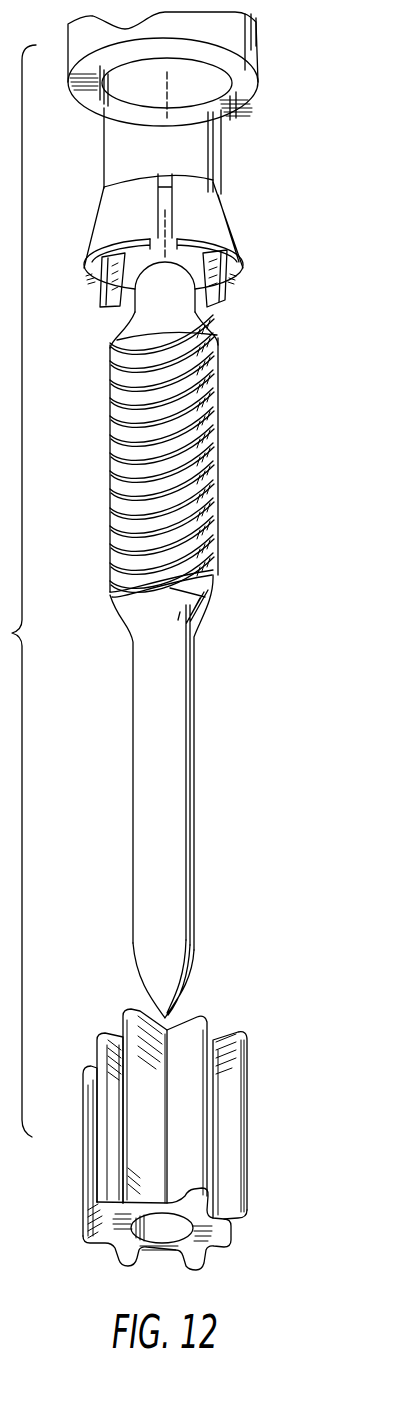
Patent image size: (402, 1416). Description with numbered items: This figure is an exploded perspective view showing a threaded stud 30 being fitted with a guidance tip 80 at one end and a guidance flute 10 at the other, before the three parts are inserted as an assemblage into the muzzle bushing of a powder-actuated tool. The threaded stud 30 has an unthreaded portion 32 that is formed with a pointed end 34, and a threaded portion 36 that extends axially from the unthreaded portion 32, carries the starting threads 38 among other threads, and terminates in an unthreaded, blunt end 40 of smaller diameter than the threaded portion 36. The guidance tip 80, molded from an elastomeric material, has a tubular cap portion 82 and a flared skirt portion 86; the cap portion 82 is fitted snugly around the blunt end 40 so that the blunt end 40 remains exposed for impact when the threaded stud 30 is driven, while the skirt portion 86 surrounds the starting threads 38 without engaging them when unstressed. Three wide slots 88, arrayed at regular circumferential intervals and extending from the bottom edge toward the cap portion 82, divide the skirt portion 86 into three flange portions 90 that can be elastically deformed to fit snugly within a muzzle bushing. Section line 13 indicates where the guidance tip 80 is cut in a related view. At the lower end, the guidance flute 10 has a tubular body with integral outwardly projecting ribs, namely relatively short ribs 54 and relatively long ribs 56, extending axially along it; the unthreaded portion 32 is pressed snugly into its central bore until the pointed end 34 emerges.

The guidance flute 10 is at (169, 1129).
The section line 13- 13 is at (177, 85).
The threaded stud 30 is at (194, 640).
The unthreaded portion 32 is at (187, 757).
The pointed end 34 is at (168, 1002).
The threaded portion 36 is at (192, 456).
The starting threads 38 is at (214, 371).
The blunt end 40 is at (148, 293).
The relatively short ribs 54 is at (100, 1045).
The relatively long ribs 56 is at (128, 1015).
The guidance tip 80 is at (165, 172).
The cap portion 82 is at (223, 148).
The skirt portion 86 is at (225, 225).
The wide slots 88 is at (167, 168).
The flange portions 90 is at (238, 268).